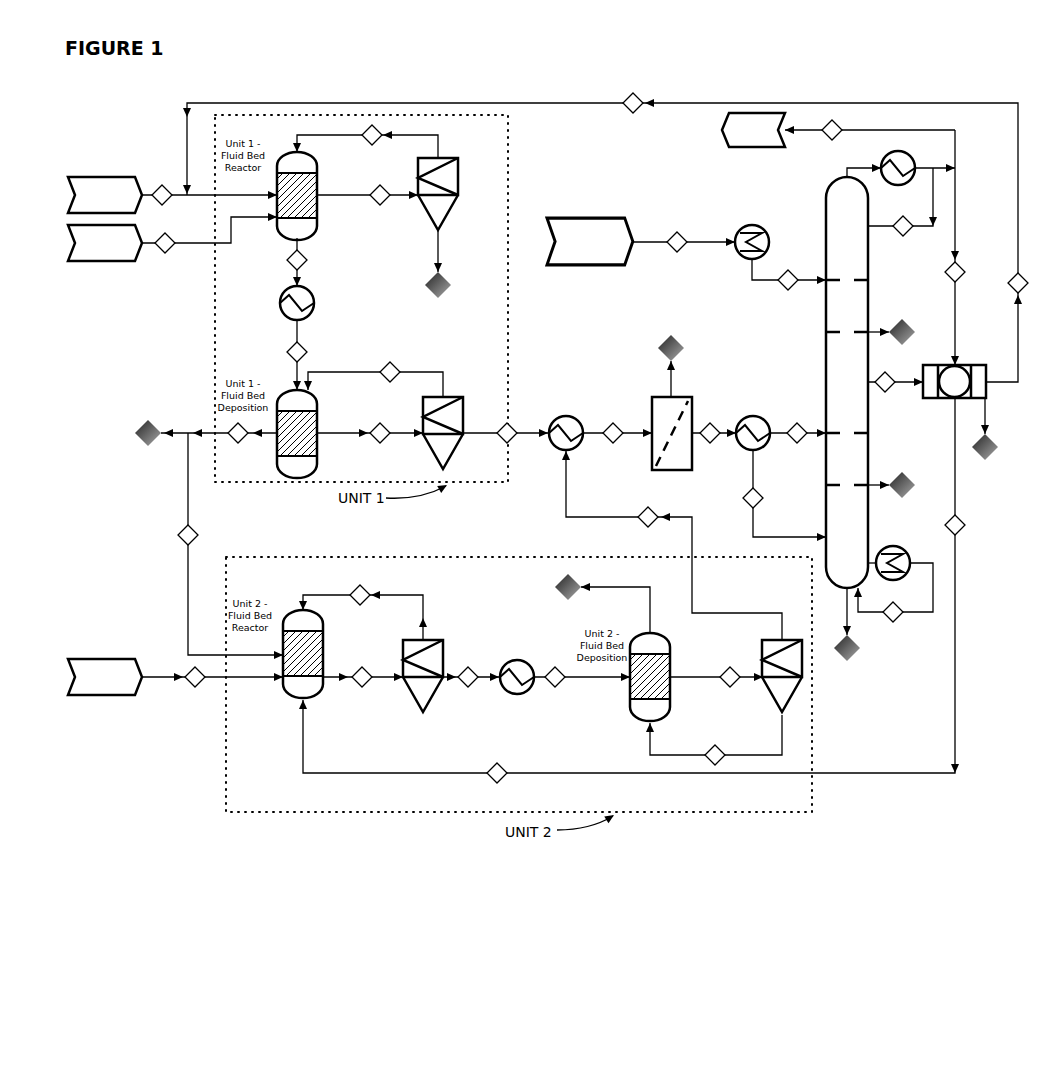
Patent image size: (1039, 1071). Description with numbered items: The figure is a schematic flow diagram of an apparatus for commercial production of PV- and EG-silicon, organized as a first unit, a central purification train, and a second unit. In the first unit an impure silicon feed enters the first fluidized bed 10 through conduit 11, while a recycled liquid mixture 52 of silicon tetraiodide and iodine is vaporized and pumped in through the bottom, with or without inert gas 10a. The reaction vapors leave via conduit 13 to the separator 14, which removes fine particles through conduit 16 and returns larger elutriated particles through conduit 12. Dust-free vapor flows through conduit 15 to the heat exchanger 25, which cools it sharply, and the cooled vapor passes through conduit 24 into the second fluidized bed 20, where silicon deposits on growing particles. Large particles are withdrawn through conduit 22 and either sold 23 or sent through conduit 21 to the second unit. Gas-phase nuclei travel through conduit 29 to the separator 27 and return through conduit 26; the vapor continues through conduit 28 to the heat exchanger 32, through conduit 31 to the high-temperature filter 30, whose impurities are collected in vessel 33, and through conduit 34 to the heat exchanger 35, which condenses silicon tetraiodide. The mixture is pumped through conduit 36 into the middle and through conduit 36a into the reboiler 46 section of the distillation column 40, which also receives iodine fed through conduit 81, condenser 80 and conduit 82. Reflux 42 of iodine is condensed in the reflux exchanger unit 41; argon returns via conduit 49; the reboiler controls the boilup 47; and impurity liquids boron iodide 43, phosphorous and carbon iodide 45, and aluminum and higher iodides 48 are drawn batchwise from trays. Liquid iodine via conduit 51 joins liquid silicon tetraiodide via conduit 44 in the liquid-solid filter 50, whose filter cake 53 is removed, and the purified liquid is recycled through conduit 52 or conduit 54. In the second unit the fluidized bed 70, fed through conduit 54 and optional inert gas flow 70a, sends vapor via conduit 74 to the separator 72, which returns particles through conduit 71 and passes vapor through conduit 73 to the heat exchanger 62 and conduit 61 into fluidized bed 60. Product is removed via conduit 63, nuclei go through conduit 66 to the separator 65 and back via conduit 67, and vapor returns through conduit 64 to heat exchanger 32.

The first fluidized bed 10 is at (306, 196).
The inert gas 10a is at (170, 249).
The conduit 11 is at (164, 201).
The conduit 12 is at (372, 145).
The conduit 13 is at (380, 205).
The separator 14 is at (450, 194).
The conduit 15 is at (306, 260).
The conduit 16 is at (426, 285).
The second fluidized bed 20 is at (287, 434).
The conduit 21 is at (178, 532).
The conduit 22 is at (241, 439).
The sold particles 23 is at (145, 425).
The conduit 24 is at (307, 352).
The heat exchanger 25 is at (311, 303).
The conduit 26 is at (392, 378).
The separator 27 is at (460, 428).
The conduit 28 is at (511, 444).
The conduit 29 is at (380, 441).
The high-temperature filter 30 is at (673, 443).
The conduit 31 is at (613, 442).
The heat exchanger 32 is at (566, 424).
The vessel 33 is at (669, 340).
The conduit 34 is at (710, 442).
The heat exchanger 35 is at (753, 426).
The conduit 36 is at (797, 441).
The conduit 36a is at (768, 498).
The distillation column 40 is at (835, 382).
The reflux exchanger unit 41 is at (889, 164).
The reflux 42 is at (903, 234).
The boron iodide stream 43 is at (899, 323).
The conduit 44 is at (885, 390).
The phosphorous and carbon iodide stream 45 is at (899, 477).
The reboiler 46 is at (893, 553).
The boilup 47 is at (893, 620).
The aluminum iodide and higher boiling iodides stream 48 is at (843, 641).
The conduit 49 is at (827, 135).
The liquid-solid filter 50 is at (954, 375).
The conduit 51 is at (959, 281).
The liquid mixture 52 is at (825, 193).
The filter cake 53 is at (995, 449).
The conduit 54 is at (729, 649).
The fluidized bed 60 is at (639, 682).
The conduit 61 is at (555, 685).
The heat exchanger 62 is at (517, 669).
The conduit 63 is at (555, 587).
The conduit 64 is at (646, 526).
The separator 65 is at (770, 673).
The conduit 66 is at (730, 685).
The conduit 67 is at (722, 750).
The fluidized bed 70 is at (296, 663).
The inert gas flow 70a is at (195, 686).
The conduit 71 is at (359, 588).
The separator 72 is at (431, 669).
The conduit 73 is at (468, 685).
The conduit 74 is at (362, 669).
The condenser 80 is at (755, 235).
The conduit 81 is at (677, 253).
The conduit 82 is at (782, 287).